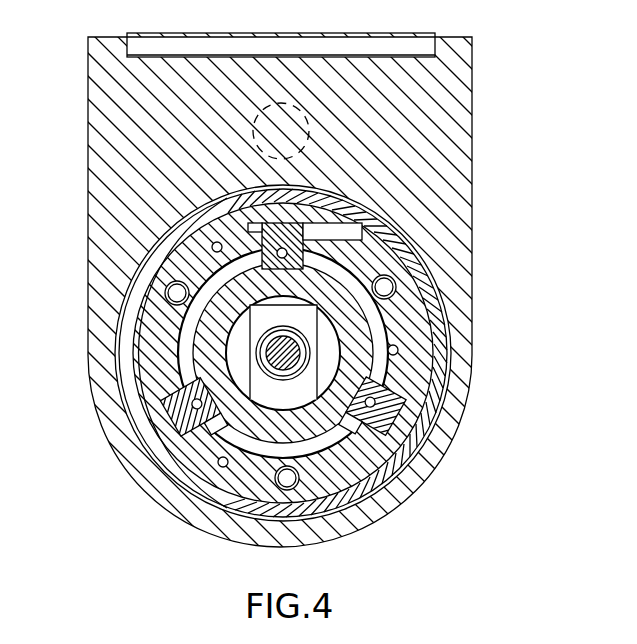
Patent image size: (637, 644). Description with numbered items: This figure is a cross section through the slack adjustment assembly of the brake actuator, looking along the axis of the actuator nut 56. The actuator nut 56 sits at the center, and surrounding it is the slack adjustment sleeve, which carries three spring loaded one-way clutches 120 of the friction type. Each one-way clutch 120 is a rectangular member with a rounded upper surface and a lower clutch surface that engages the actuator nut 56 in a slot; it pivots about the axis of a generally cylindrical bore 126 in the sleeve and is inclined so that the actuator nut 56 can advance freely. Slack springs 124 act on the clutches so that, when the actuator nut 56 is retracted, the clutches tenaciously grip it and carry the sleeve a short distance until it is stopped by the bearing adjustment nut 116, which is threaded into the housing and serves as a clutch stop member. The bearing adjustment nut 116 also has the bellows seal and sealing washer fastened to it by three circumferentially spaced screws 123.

The actuator nut 56 is at (205, 341).
The bearing adjustment nut 116 is at (403, 450).
The one-way clutch 120 is at (407, 428).
The screw 123 is at (403, 347).
The slack spring 124 is at (418, 270).
The cylindrical bore 126 is at (325, 228).